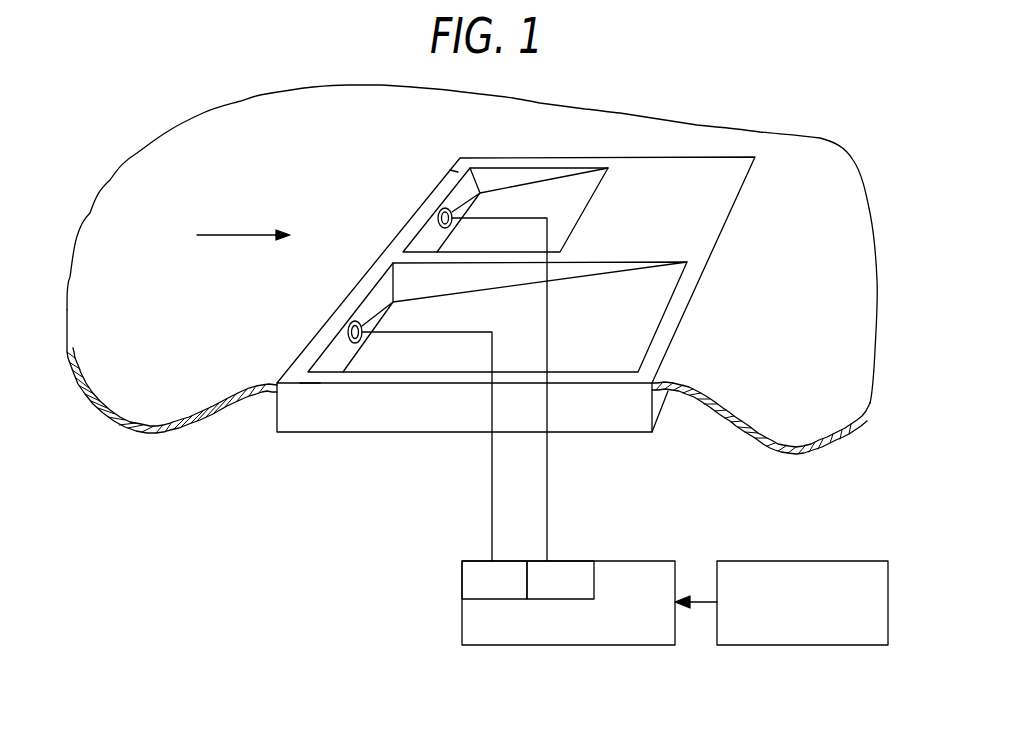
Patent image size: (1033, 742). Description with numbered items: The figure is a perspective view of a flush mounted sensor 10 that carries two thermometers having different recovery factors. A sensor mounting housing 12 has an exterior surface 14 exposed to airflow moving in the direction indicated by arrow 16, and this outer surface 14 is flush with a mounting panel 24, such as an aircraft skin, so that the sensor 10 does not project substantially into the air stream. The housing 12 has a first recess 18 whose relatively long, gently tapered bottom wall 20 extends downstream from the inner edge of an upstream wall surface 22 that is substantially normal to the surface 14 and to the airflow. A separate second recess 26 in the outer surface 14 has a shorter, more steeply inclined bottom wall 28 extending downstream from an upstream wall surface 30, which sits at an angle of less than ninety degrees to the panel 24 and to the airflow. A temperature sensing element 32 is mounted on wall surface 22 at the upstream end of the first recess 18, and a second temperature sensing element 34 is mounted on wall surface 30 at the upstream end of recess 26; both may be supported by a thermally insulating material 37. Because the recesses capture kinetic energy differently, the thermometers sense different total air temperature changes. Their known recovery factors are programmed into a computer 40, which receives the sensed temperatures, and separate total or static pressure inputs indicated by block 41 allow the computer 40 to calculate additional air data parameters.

The sensor 10 is at (755, 215).
The sensor mounting housing 12 is at (588, 403).
The exterior surface 14 is at (692, 177).
The arrow 16 is at (255, 235).
The first recess 18 is at (388, 355).
The bottom wall 20 is at (643, 320).
The upstream wall surface 22 is at (375, 305).
The mounting panel 24 is at (812, 358).
The second recess 26 is at (508, 198).
The bottom wall 28 is at (570, 203).
The upstream wall surface 30 is at (460, 188).
The temperature sensing element 32 is at (353, 317).
The second temperature sensing element 34 is at (457, 210).
The thermally insulating material 37 is at (438, 212).
The computer 40 is at (632, 558).
The block 41 is at (783, 558).